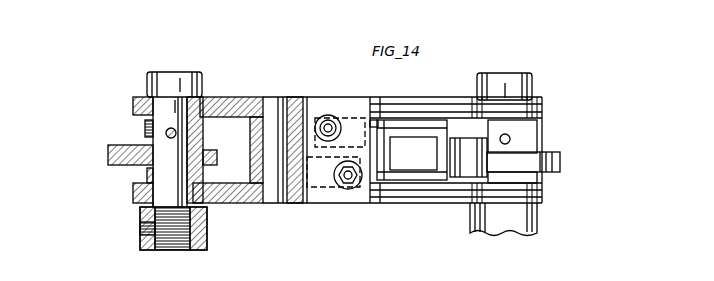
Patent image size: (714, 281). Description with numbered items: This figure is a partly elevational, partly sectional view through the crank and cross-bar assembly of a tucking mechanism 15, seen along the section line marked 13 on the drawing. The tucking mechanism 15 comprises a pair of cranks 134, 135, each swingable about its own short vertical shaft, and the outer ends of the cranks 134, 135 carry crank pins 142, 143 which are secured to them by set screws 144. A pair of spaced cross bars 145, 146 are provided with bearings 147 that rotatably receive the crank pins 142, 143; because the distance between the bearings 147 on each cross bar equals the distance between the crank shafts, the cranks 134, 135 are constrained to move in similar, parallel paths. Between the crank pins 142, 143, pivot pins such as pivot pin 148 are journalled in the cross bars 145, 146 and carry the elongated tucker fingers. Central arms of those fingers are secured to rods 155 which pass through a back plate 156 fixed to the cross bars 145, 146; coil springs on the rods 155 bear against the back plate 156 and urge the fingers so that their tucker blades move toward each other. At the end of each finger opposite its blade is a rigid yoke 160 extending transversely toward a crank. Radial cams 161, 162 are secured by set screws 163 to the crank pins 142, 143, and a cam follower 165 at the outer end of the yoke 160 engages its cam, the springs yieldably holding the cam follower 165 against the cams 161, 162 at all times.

The section line 13- 13 is at (135, 120).
The tucking mechanism 15 is at (528, 63).
The crank 134 is at (204, 242).
The crank 135 is at (532, 222).
The crank pin 142 is at (162, 196).
The crank pin 143 is at (500, 90).
The set screw 144 is at (142, 228).
The cross bar 145 is at (215, 98).
The cross bar 146 is at (235, 204).
The bearing 147 is at (142, 98).
The pivot pin 148 is at (275, 100).
The rod 155 is at (352, 189).
The back plate 156 is at (330, 116).
The yoke 160 is at (447, 178).
The radial cam 161 is at (106, 152).
The radial cam 162 is at (555, 153).
The set screw 163 is at (145, 130).
The cam follower 165 is at (484, 158).